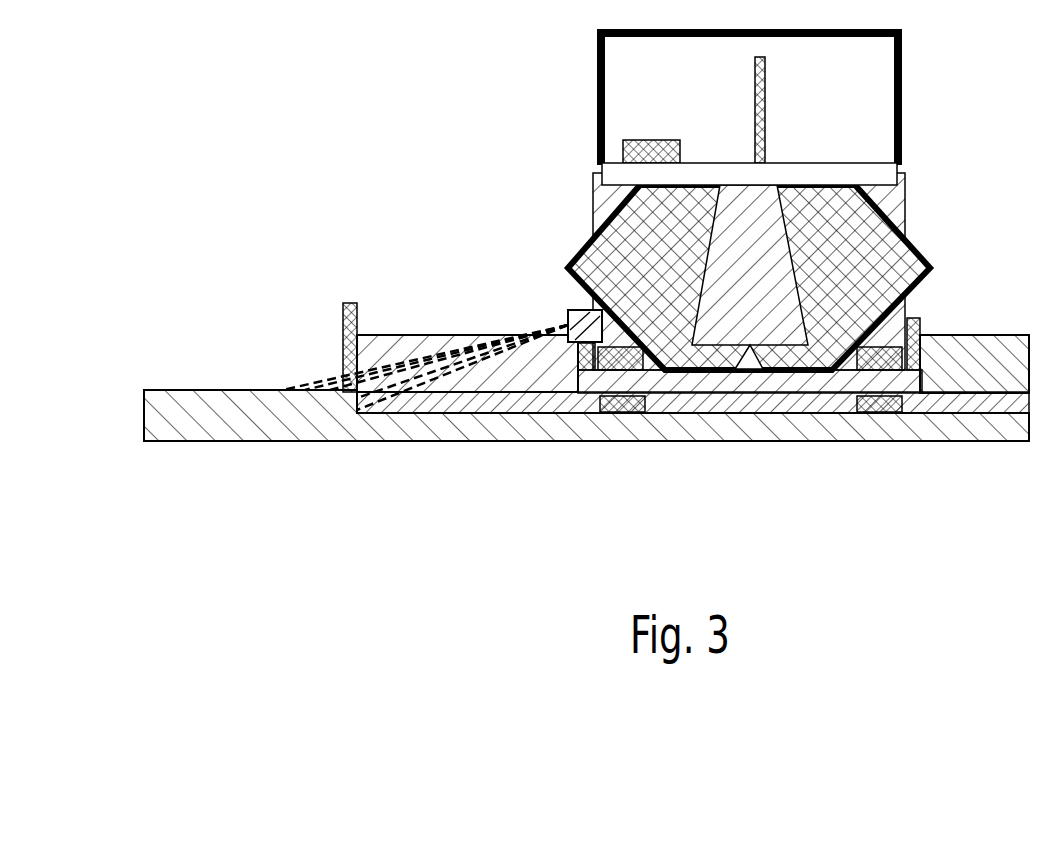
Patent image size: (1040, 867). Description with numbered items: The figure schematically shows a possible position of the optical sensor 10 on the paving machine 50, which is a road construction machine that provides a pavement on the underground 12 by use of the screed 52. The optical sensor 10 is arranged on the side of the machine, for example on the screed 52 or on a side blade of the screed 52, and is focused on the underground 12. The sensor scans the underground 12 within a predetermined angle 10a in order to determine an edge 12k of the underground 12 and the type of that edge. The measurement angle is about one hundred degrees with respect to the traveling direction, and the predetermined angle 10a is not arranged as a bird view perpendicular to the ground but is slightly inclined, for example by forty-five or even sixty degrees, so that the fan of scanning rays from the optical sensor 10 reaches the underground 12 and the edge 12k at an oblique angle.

The optical sensor 10 is at (584, 312).
The predetermined angle 10a is at (451, 355).
The underground 12 is at (578, 427).
The edge 12k is at (353, 400).
The paving machine 50 is at (830, 172).
The screed 52 is at (967, 405).